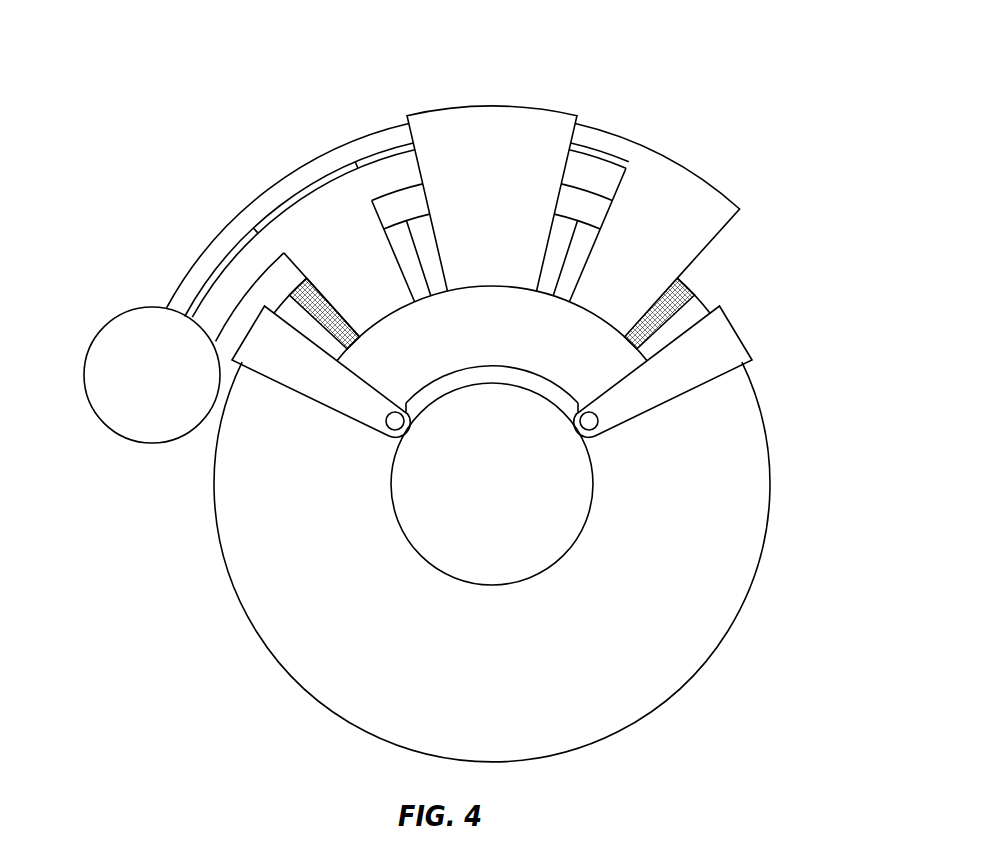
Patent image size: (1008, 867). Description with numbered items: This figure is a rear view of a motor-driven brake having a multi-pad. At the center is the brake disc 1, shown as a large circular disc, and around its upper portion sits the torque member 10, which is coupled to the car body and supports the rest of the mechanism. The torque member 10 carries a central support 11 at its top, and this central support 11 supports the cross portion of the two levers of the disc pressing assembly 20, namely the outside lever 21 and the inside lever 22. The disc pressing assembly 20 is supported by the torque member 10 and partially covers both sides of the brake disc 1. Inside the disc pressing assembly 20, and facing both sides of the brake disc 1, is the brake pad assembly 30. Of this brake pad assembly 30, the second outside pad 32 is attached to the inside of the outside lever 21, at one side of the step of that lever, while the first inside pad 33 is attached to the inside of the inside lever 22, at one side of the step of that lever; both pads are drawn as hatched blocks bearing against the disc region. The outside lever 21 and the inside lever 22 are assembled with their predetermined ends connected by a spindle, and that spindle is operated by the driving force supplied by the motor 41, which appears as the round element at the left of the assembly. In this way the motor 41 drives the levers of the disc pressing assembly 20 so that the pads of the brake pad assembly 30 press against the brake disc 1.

The brake disc 1 is at (742, 449).
The torque member 10 is at (742, 340).
The central support 11 is at (488, 118).
The disc pressing assembly 20 is at (528, 229).
The outside lever 21 is at (693, 198).
The inside lever 22 is at (326, 213).
The brake pad assembly 30 is at (487, 271).
The second outside pad 32 is at (676, 288).
The first inside pad 33 is at (300, 281).
The motor 41 is at (131, 330).